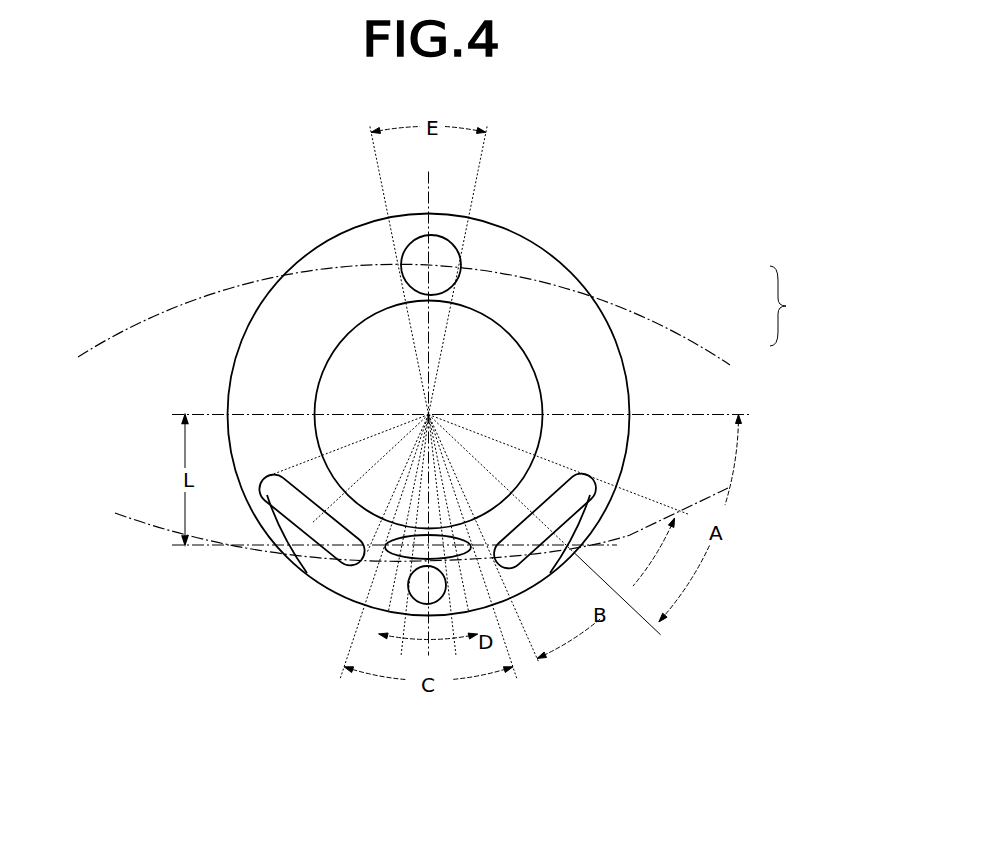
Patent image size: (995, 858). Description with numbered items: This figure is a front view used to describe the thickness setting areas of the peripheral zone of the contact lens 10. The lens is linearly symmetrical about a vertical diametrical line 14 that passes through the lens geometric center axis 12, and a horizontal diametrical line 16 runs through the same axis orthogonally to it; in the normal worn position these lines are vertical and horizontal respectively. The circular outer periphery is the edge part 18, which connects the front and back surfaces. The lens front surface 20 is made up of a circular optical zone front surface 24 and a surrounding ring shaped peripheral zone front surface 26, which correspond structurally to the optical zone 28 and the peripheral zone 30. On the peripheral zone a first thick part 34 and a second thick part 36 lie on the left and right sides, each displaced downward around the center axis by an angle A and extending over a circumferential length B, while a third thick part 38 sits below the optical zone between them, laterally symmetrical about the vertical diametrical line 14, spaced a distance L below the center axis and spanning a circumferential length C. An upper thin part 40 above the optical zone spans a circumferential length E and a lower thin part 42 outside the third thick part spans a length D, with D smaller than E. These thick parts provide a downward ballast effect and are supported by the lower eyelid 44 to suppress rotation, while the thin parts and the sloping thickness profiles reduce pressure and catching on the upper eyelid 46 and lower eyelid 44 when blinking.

The contact lens 10 is at (448, 374).
The lens geometric center axis 12 is at (425, 408).
The vertical diametrical line 14 is at (428, 196).
The horizontal diametrical line 16 is at (653, 415).
The edge part 18 is at (543, 251).
The lens front surface 20 is at (787, 306).
The optical zone front surface 24 is at (500, 351).
The peripheral zone front surface 26 is at (545, 312).
The optical zone 28 is at (744, 330).
The peripheral zone 30 is at (744, 287).
The first thick part 34 is at (292, 497).
The second thick part 36 is at (588, 503).
The third thick part 38 is at (362, 566).
The upper thin part 40 is at (440, 254).
The lower thin part 42 is at (447, 590).
The lower eyelid 44 is at (141, 522).
The upper eyelid 46 is at (180, 306).